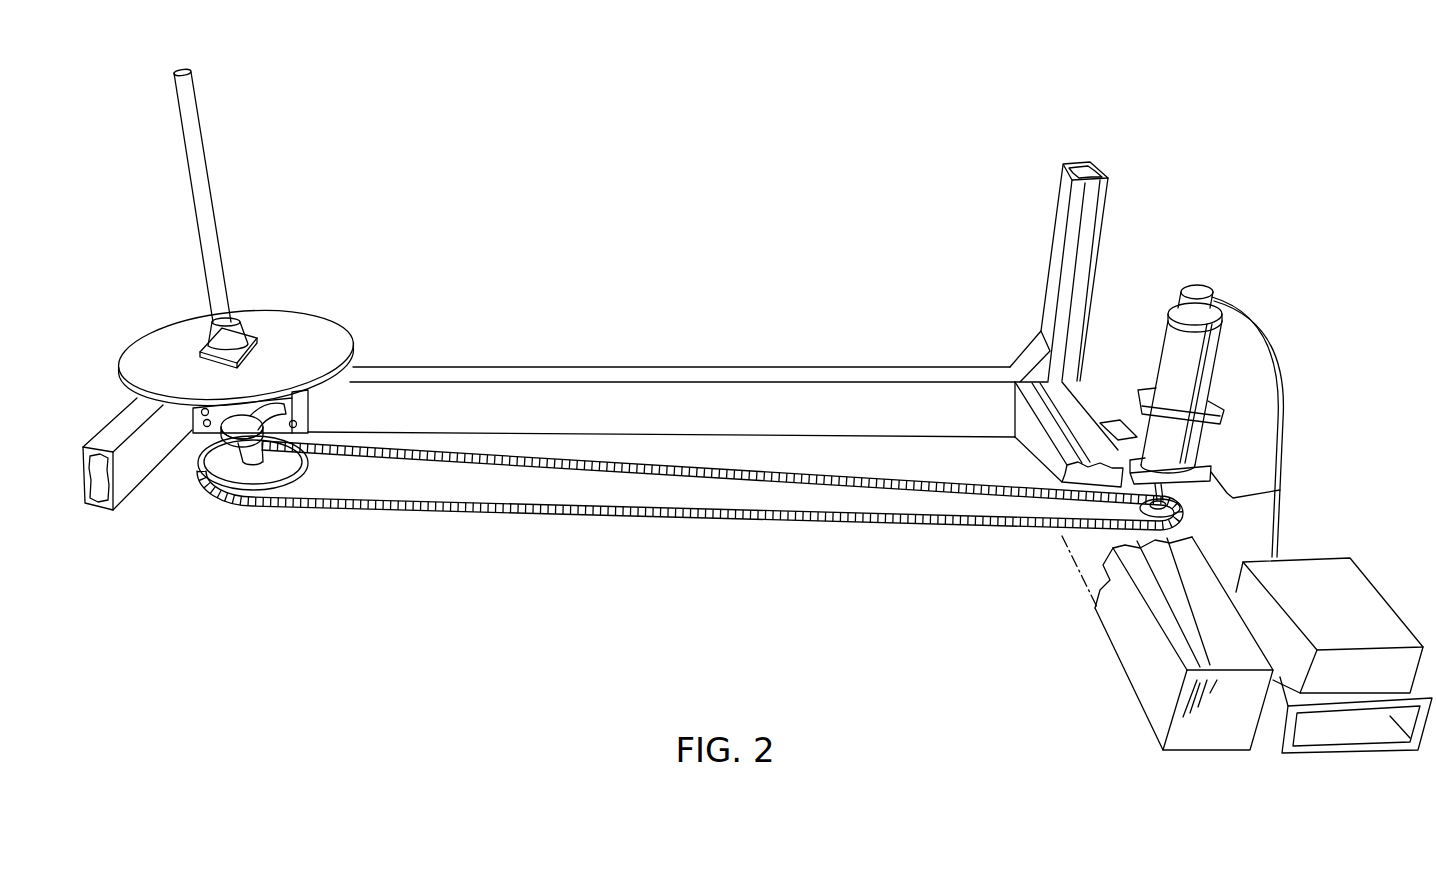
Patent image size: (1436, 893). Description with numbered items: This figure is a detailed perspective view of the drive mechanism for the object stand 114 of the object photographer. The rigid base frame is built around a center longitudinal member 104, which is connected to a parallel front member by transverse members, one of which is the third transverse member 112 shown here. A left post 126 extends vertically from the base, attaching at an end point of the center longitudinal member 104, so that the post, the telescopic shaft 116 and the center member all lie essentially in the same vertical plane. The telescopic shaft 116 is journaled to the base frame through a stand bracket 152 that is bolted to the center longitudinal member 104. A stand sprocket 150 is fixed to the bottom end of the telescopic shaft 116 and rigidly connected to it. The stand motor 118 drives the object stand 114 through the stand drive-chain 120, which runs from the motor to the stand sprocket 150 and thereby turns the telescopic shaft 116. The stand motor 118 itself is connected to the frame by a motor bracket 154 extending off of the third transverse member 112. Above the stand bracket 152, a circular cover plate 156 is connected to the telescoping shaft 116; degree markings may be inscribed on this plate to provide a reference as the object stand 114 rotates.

The center longitudinal member 104 is at (796, 363).
The third transverse member 112 is at (1128, 675).
The object stand 114 is at (286, 306).
The telescopic shaft 116 is at (212, 227).
The stand motor 118 is at (1162, 347).
The stand drive-chain 120 is at (847, 531).
The left post 126 is at (1105, 221).
The stand sprocket 150 is at (247, 478).
The stand bracket 152 is at (312, 415).
The motor bracket 154 is at (1280, 490).
The circular cover plate 156 is at (350, 336).